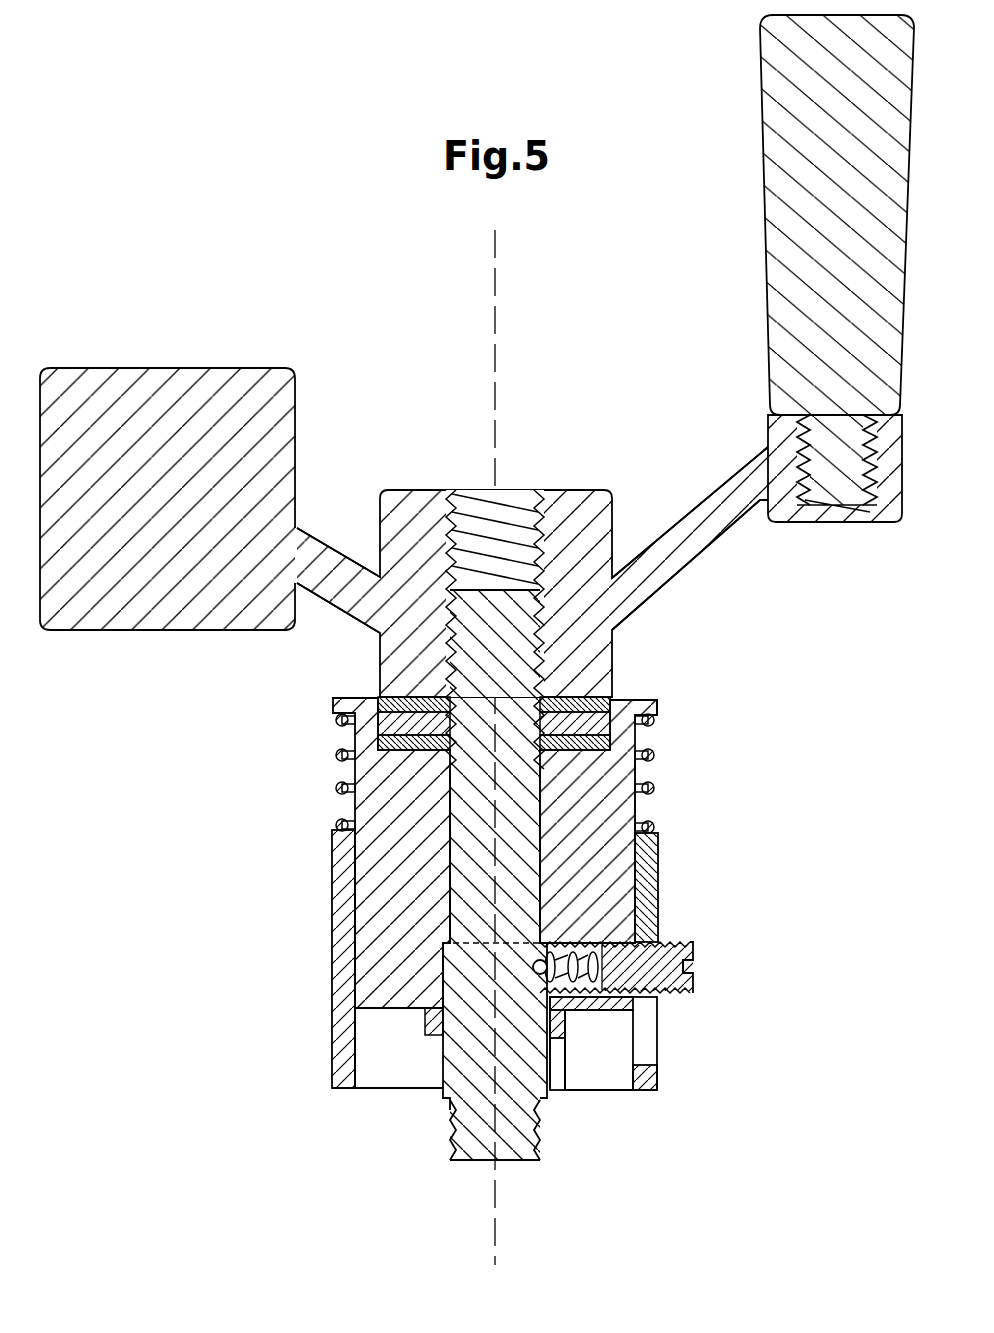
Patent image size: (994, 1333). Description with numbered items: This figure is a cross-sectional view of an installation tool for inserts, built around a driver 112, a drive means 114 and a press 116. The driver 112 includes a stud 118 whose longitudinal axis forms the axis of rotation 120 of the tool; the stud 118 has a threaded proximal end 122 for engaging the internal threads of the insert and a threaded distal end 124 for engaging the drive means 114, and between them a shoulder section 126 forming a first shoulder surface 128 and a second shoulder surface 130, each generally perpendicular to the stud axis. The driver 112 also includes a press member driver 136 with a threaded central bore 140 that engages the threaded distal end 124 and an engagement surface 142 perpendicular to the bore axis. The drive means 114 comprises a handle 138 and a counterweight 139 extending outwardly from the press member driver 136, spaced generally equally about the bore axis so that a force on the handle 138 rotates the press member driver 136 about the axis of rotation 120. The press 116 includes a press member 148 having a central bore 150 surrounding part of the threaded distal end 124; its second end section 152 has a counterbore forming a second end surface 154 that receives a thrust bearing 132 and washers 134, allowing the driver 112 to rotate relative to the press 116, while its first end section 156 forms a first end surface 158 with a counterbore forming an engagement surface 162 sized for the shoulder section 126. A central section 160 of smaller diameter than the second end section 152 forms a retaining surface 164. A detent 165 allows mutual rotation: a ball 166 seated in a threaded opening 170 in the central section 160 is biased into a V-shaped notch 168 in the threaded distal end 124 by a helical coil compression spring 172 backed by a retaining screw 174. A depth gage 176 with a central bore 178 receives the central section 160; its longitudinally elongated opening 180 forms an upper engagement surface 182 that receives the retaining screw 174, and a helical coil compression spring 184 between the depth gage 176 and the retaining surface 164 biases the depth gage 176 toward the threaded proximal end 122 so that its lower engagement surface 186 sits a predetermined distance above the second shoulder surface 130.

The driver 112 is at (411, 478).
The drive means 114 is at (752, 298).
The press 116 is at (662, 844).
The stud 118 is at (512, 590).
The axis of rotation 120 is at (497, 270).
The threaded proximal end 122 is at (540, 1148).
The threaded distal end 124 is at (536, 655).
The shoulder section 126 is at (442, 1040).
The first shoulder surface 128 is at (398, 1010).
The second shoulder surface 130 is at (452, 1098).
The thrust bearing 132 is at (393, 722).
The washer 134 is at (377, 696).
The press member driver 136 is at (388, 480).
The handle 138 is at (760, 168).
The counterweight 139 is at (202, 368).
The threaded central bore 140 is at (480, 497).
The engagement surface 142 is at (600, 722).
The press member 148 is at (660, 880).
The central bore 150 is at (452, 875).
The second end section 152 is at (640, 716).
The second end surface 154 is at (600, 748).
The first end section 156 is at (600, 1025).
The first end surface 158 is at (565, 1025).
The central section 160 is at (658, 833).
The engagement surface 162 is at (443, 950).
The retaining surface 164 is at (640, 724).
The detent 165 is at (712, 970).
The ball 166 is at (545, 958).
The V-shaped notch 168 is at (552, 1020).
The threaded opening 170 is at (655, 993).
The helical coil compression spring 172 is at (578, 950).
The retaining screw 174 is at (693, 982).
The depth gage 176 is at (332, 861).
The central bore 178 is at (355, 866).
The longitudinally elongated opening 180 is at (640, 1022).
The upper engagement surface 182 is at (657, 955).
The helical coil compression spring 184 is at (340, 788).
The lower engagement surface 186 is at (345, 1092).